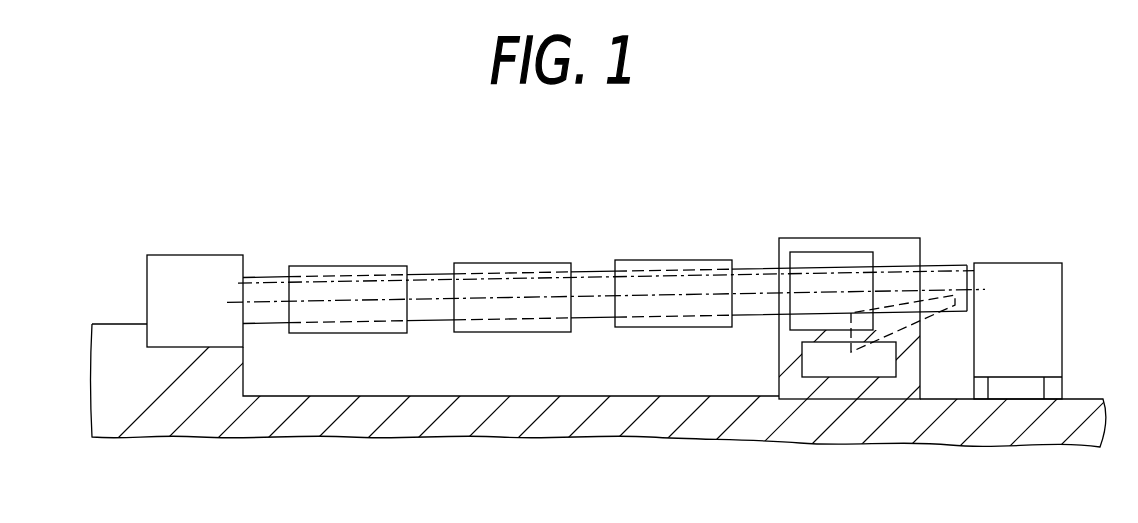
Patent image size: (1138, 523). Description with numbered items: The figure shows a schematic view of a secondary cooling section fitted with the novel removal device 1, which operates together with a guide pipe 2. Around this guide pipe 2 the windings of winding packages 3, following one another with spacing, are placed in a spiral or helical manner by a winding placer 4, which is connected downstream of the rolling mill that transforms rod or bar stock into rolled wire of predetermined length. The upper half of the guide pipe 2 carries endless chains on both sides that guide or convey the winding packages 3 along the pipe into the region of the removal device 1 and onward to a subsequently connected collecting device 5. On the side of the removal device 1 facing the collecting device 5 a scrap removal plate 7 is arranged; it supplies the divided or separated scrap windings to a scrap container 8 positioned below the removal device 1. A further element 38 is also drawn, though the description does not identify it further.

The housing 1 is at (900, 252).
The shaft 2 is at (437, 308).
The bearings 3 is at (468, 272).
The drive block 4 is at (190, 265).
The support block 5 is at (1043, 302).
The sensor element 7 is at (850, 345).
The mounting block 8 is at (818, 361).
The line 38 is at (752, 270).